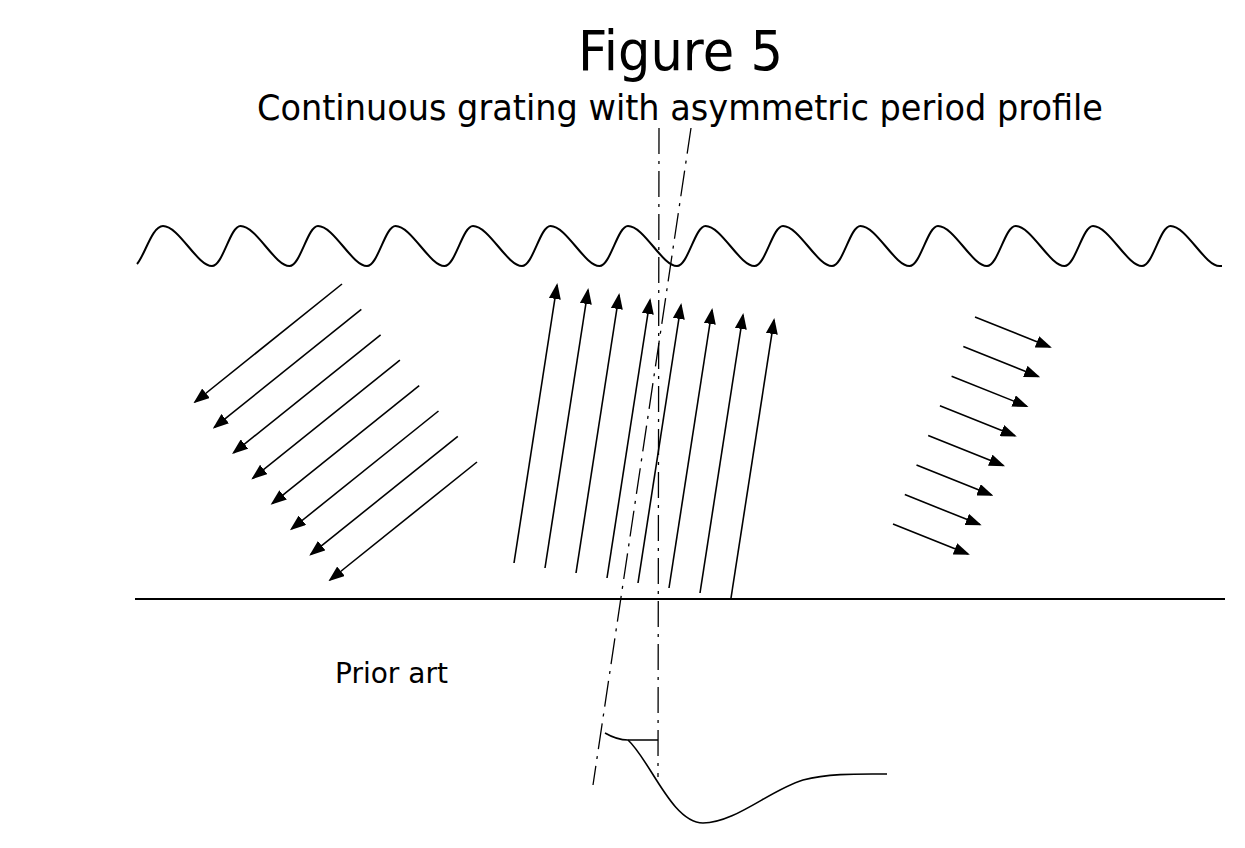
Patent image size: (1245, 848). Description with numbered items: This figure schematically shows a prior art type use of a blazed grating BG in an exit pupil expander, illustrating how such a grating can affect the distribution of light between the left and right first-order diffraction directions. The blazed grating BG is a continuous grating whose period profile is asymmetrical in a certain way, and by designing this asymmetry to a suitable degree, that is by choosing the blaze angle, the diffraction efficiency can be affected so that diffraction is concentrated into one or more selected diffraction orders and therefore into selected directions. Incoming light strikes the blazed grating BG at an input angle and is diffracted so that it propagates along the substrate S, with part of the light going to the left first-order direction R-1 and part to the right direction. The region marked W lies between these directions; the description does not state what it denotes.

The blazed grating BG is at (462, 230).
The substrate S is at (325, 432).
The left first diffraction order R-1 is at (324, 521).
The zeroth order / reflected beam width W is at (644, 441).